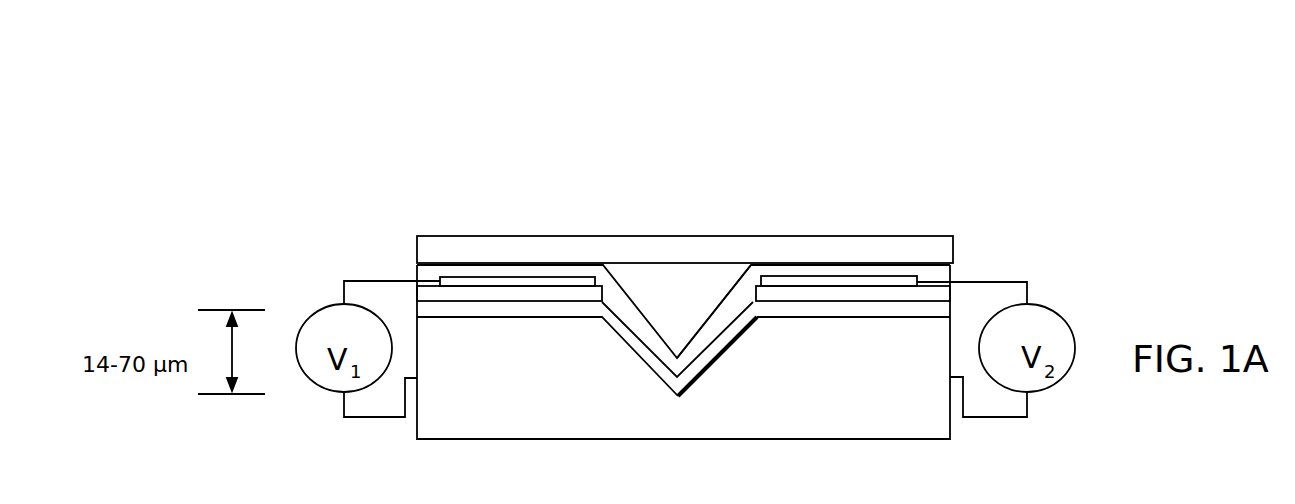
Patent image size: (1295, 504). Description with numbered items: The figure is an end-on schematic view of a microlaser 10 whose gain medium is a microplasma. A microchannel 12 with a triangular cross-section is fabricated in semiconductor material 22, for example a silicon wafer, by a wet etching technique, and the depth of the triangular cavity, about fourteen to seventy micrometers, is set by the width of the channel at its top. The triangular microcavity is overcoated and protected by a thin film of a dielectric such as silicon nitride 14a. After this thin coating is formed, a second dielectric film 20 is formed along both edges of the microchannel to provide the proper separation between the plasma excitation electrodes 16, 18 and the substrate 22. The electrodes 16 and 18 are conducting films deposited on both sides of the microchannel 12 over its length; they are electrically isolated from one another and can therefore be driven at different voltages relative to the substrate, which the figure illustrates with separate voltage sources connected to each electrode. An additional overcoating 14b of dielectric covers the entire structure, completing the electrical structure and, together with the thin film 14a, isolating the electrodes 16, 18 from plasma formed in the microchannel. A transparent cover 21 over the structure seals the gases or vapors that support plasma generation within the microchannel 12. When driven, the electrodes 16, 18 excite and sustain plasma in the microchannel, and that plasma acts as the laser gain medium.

The microlaser 10 is at (282, 101).
The microchannel 12 is at (637, 291).
The thin film of dielectric 14a is at (832, 312).
The additional overcoating of dielectric 14b is at (733, 302).
The plasma excitation electrode 16 is at (838, 275).
The plasma excitation electrode 18 is at (508, 286).
The second dielectric film 20 is at (518, 276).
The transparent cover 21 is at (541, 248).
The semiconductor material 22 is at (573, 412).